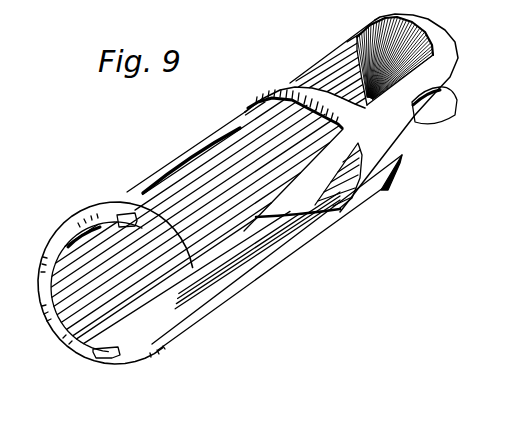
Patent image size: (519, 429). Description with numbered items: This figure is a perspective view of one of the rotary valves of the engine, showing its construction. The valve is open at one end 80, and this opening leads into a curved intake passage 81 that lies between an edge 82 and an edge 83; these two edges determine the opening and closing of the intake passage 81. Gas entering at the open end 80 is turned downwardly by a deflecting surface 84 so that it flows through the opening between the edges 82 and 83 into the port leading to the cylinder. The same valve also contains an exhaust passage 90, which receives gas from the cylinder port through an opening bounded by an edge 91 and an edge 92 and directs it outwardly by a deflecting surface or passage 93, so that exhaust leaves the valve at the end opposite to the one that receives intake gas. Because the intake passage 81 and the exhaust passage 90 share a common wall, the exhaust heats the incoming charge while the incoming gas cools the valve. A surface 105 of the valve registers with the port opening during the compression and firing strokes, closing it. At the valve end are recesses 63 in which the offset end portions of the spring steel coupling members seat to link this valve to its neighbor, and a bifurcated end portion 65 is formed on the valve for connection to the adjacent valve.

The recesses 63 is at (122, 215).
The bifurcated end portion 65 is at (430, 98).
The open end 80 is at (90, 285).
The intake passage 81 is at (260, 240).
The edge 82 is at (222, 239).
The edge 83 is at (227, 298).
The deflecting surface 84 is at (303, 198).
The exhaust passage 90 is at (292, 132).
The edge 91 is at (259, 186).
The edge 92 is at (195, 150).
The deflecting surface or passage 93 is at (390, 62).
The surface 105 is at (54, 314).